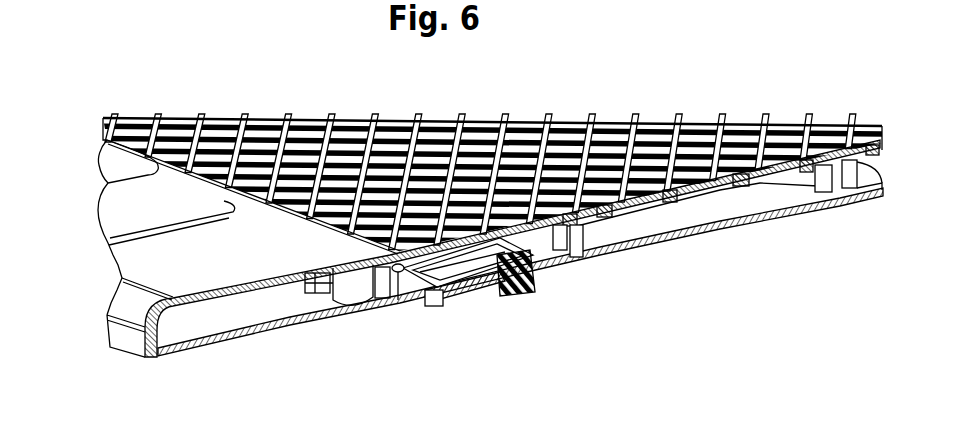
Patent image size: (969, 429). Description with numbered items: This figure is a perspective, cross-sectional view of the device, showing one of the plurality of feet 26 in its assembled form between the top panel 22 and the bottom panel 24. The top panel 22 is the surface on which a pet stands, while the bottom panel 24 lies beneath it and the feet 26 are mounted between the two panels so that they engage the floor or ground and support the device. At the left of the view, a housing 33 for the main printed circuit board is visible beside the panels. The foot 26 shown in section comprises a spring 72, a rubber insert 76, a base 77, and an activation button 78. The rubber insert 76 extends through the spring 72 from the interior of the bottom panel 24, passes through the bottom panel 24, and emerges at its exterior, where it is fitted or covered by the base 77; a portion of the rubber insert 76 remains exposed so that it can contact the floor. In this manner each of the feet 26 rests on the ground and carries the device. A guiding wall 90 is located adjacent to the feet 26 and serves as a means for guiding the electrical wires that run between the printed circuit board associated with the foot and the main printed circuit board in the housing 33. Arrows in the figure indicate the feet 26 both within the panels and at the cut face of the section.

The top panel 22 is at (613, 127).
The bottom panel 24 is at (772, 218).
The plurality of feet 26 is at (630, 268).
The housing 33 is at (113, 213).
The spring 72 is at (412, 268).
The rubber insert 76 is at (543, 287).
The base 77 is at (430, 305).
The activation button 78 is at (423, 292).
The guiding wall 90 is at (308, 285).